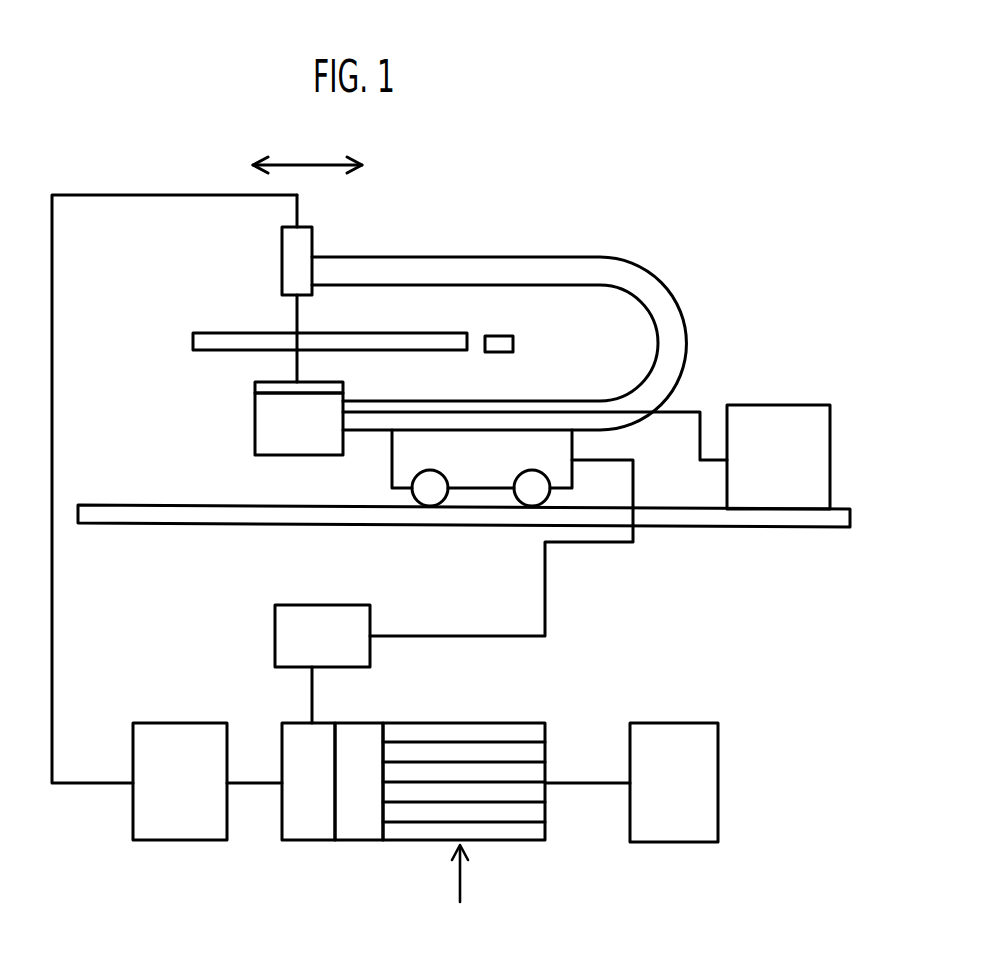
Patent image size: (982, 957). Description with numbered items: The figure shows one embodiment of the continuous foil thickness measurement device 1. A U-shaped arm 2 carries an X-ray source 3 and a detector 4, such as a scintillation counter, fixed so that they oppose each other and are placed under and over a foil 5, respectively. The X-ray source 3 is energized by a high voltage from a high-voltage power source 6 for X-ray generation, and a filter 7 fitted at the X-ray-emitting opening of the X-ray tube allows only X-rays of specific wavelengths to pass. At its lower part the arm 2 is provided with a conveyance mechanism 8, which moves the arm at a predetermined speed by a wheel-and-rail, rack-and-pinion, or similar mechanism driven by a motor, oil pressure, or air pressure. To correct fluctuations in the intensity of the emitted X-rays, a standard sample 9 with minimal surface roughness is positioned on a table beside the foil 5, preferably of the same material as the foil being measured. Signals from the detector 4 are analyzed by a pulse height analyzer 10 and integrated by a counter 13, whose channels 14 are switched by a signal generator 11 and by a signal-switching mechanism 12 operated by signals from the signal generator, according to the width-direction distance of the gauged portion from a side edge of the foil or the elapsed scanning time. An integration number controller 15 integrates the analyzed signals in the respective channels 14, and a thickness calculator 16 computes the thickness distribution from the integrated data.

The continuous foil thickness measurement device 1 is at (513, 140).
The U-shaped arm 2 is at (503, 257).
The X-ray source 3 is at (267, 437).
The detector 4 is at (282, 255).
The foil 5 is at (233, 332).
The high-voltage power source 6 is at (778, 457).
The filter 7 is at (255, 385).
The conveyance mechanism 8 is at (555, 478).
The standard sample 9 is at (515, 337).
The pulse height analyzer 10 is at (180, 781).
The sensor circuit 11 is at (322, 636).
The signal-switching mechanism 12 is at (308, 815).
The counter 13 is at (462, 889).
The channels 14 is at (513, 822).
The integration number controller 15 is at (368, 815).
The thickness calculator 16 is at (674, 782).